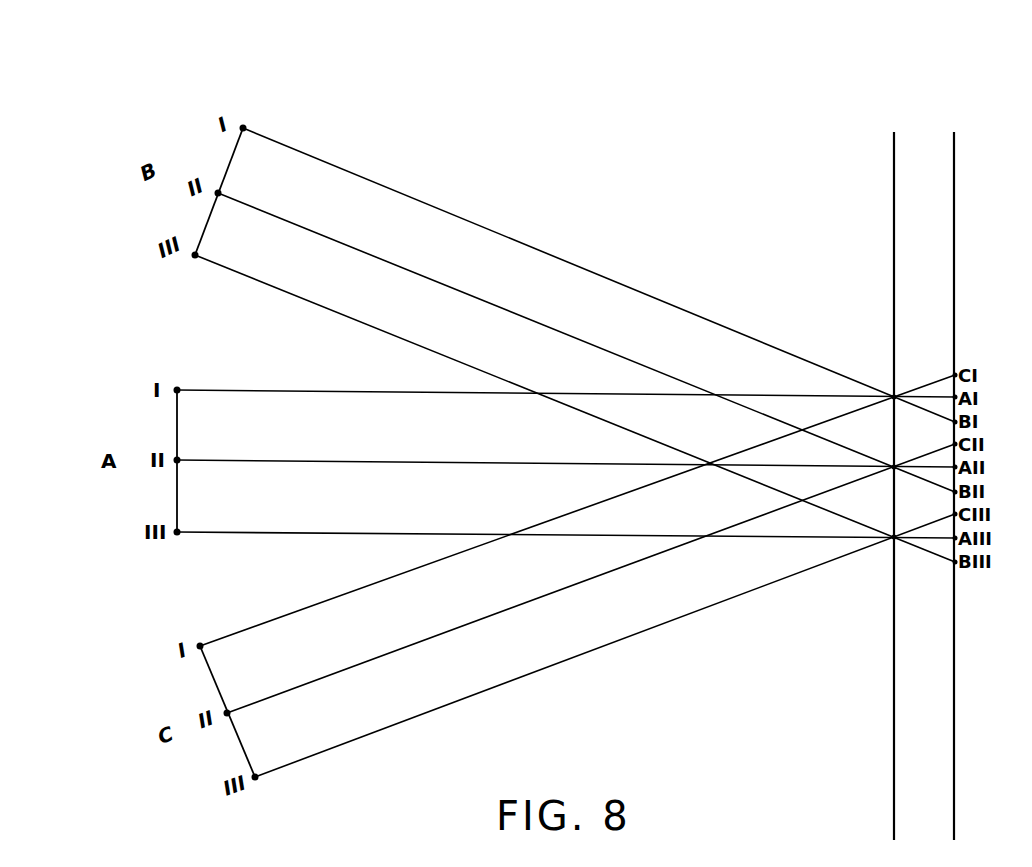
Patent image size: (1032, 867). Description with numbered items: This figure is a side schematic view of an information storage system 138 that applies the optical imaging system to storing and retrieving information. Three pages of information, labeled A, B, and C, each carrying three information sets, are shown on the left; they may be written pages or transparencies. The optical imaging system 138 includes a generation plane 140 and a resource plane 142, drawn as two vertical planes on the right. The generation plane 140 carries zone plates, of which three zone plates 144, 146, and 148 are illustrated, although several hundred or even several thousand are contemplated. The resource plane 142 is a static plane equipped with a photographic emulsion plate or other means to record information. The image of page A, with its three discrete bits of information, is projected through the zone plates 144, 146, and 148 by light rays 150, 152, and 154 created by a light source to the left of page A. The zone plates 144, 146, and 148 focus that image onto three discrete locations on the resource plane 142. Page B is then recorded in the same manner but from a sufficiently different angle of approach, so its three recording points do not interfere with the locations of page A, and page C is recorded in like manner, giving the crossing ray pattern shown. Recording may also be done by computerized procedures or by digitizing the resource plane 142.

The information storage system 138 is at (925, 476).
The generation plane 140 is at (893, 762).
The resource plane 142 is at (955, 772).
The zone plate 144 is at (890, 393).
The zone plate 146 is at (891, 465).
The zone plate 148 is at (890, 542).
The light ray 150 is at (228, 389).
The light ray 152 is at (247, 459).
The light ray 154 is at (258, 531).